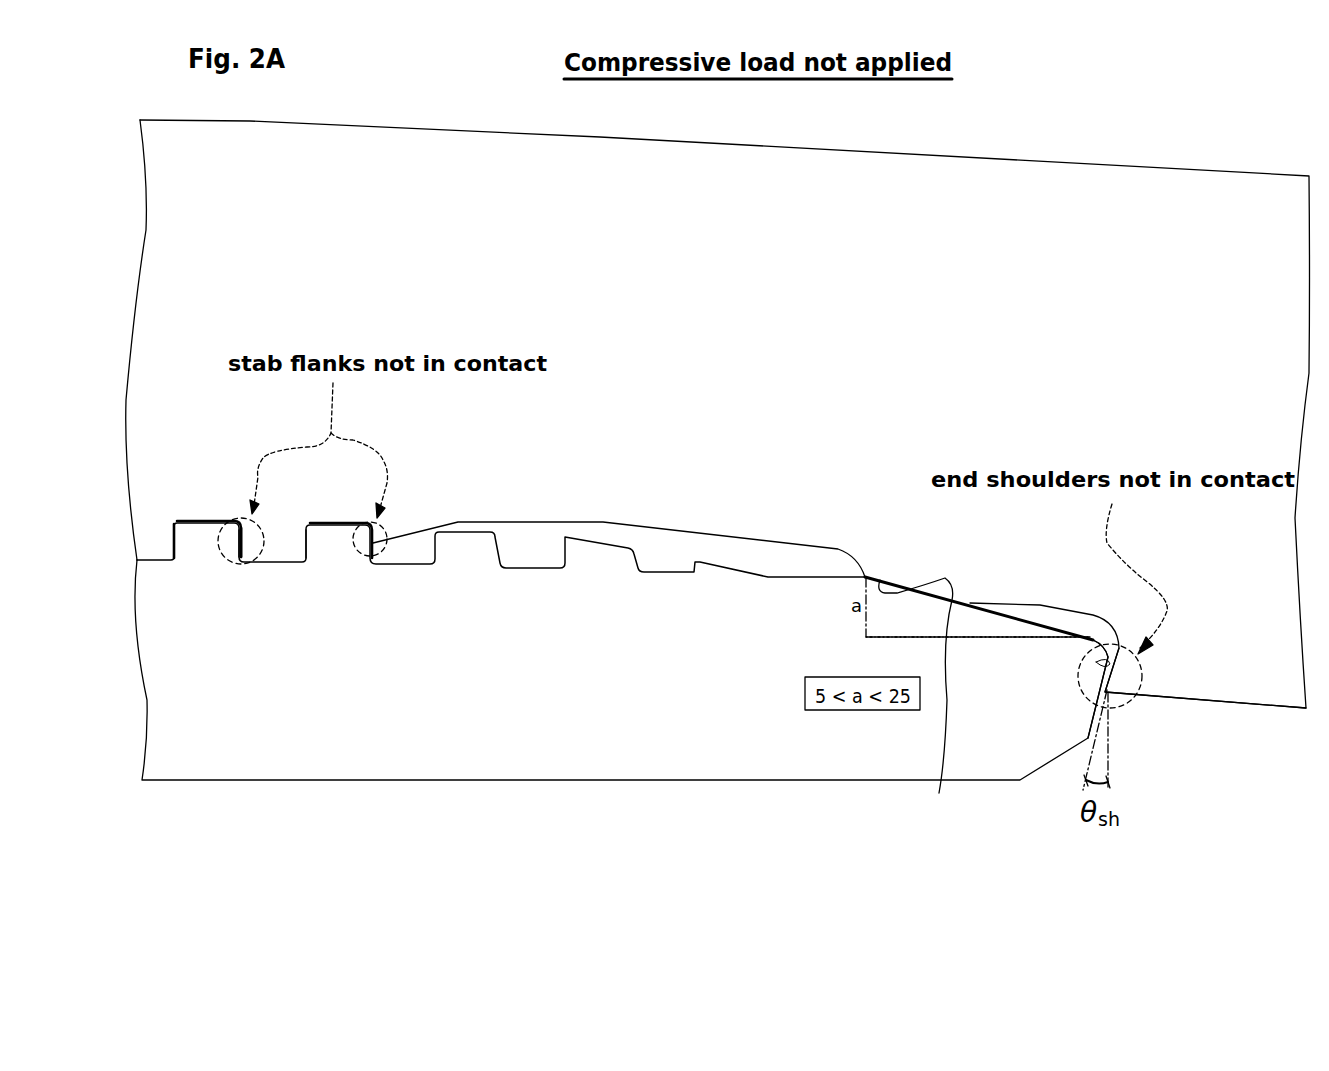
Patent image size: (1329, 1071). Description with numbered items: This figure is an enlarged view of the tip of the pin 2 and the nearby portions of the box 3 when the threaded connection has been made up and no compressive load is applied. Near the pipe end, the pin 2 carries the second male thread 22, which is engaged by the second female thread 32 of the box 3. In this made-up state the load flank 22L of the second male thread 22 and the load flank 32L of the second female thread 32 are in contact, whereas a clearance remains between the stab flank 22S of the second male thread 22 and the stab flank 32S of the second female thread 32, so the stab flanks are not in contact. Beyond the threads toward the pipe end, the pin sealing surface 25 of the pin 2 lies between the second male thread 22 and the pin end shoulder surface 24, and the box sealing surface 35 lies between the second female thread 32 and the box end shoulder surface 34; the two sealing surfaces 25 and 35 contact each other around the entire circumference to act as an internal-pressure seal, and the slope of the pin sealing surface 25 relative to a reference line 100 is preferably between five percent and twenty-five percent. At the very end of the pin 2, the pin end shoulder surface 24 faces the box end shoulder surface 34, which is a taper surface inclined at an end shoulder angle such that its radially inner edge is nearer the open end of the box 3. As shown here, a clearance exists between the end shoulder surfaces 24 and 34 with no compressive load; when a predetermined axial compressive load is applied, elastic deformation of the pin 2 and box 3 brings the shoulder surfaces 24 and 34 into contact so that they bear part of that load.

The pin 2 is at (584, 660).
The box 3 is at (688, 303).
The second male thread 22 is at (203, 527).
The load flank of the second male thread 22L is at (173, 533).
The stab flank of the second male thread 22S is at (242, 523).
The second female thread 32 is at (268, 562).
The stab flank of the second female thread 32S is at (247, 547).
The load flank of the second female thread 32L is at (312, 540).
The box sealing surface 35 is at (880, 582).
The pin sealing surface 25 is at (918, 704).
The box end shoulder surface 34 is at (1100, 662).
The pin end shoulder surface 24 is at (1120, 692).
The reference line 100 is at (978, 648).